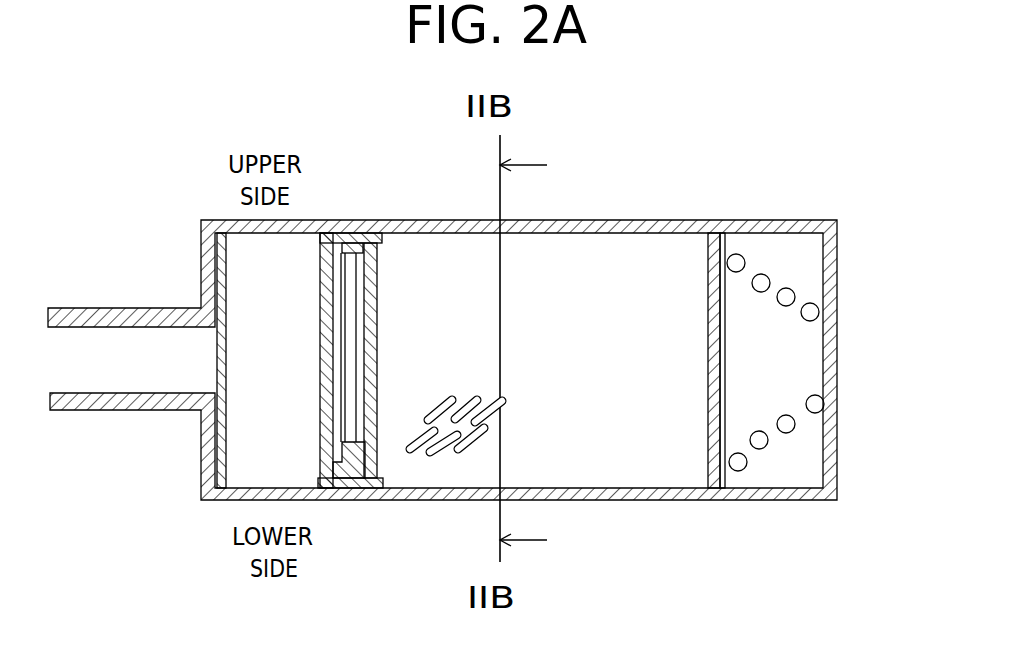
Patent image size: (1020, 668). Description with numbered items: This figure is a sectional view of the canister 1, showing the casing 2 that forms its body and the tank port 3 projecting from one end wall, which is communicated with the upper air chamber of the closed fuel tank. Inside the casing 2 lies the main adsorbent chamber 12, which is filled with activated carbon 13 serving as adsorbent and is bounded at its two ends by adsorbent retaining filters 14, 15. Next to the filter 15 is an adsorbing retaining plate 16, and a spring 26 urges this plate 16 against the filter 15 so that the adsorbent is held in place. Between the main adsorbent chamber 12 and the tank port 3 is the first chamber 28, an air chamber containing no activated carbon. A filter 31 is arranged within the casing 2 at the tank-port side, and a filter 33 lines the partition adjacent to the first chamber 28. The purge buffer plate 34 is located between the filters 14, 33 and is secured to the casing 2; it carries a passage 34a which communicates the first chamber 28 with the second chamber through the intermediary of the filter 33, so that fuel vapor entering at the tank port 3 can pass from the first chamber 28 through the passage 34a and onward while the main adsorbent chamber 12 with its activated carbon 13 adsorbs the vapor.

The canister 1 is at (442, 320).
The casing 2 is at (604, 228).
The tank port 3 is at (118, 412).
The main adsorbent chamber 12 is at (641, 460).
The activated carbon 13 is at (435, 452).
The adsorbent retaining filter 14 is at (376, 350).
The adsorbent retaining filter 15 is at (708, 362).
The adsorbing retaining plate 16 is at (728, 480).
The spring 26 is at (795, 423).
The first chamber 28 is at (283, 267).
The filter 31 is at (227, 455).
The filter 33 is at (320, 380).
The purge buffer plate 34 is at (348, 488).
The passage 34a is at (350, 315).